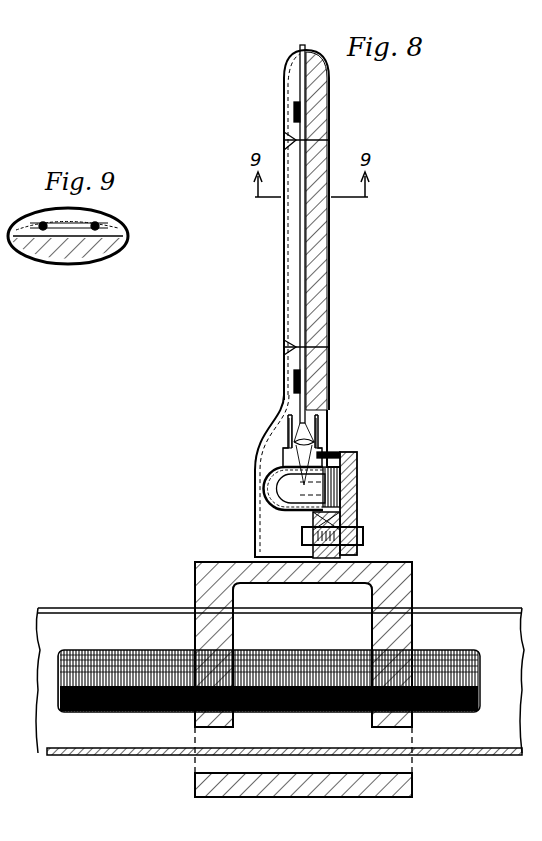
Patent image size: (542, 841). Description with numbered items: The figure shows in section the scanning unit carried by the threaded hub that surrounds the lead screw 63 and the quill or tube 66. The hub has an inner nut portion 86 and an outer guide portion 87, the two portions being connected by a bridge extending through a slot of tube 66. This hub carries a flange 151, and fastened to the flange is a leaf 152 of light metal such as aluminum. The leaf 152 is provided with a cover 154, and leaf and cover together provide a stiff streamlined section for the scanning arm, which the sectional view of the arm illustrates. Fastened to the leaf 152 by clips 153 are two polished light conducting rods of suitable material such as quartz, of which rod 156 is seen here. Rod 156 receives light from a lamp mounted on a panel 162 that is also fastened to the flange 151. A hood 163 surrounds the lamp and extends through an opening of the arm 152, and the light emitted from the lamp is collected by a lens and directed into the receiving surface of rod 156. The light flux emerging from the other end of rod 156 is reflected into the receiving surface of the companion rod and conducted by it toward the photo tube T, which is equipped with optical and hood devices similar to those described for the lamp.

In FIG. 8, the leaf 152 is at (327, 292).
In FIG. 8, the clips 153 is at (296, 110).
In FIG. 8, the cover 154 is at (284, 300).
In FIG. 9, the cover 154 is at (102, 212).
In FIG. 8, the light conducting rod 156 is at (300, 237).
In FIG. 8, the panel 162 is at (345, 480).
In FIG. 8, the hood 163 is at (272, 504).
In FIG. 8, the flange 151 is at (342, 524).
In FIG. 8, the photo tube T is at (270, 487).
In FIG. 8, the inner nut portion 86 is at (405, 640).
In FIG. 8, the lead screw 63 is at (480, 684).
In FIG. 8, the tube 66 is at (496, 750).
In FIG. 8, the outer guide portion 87 is at (200, 784).